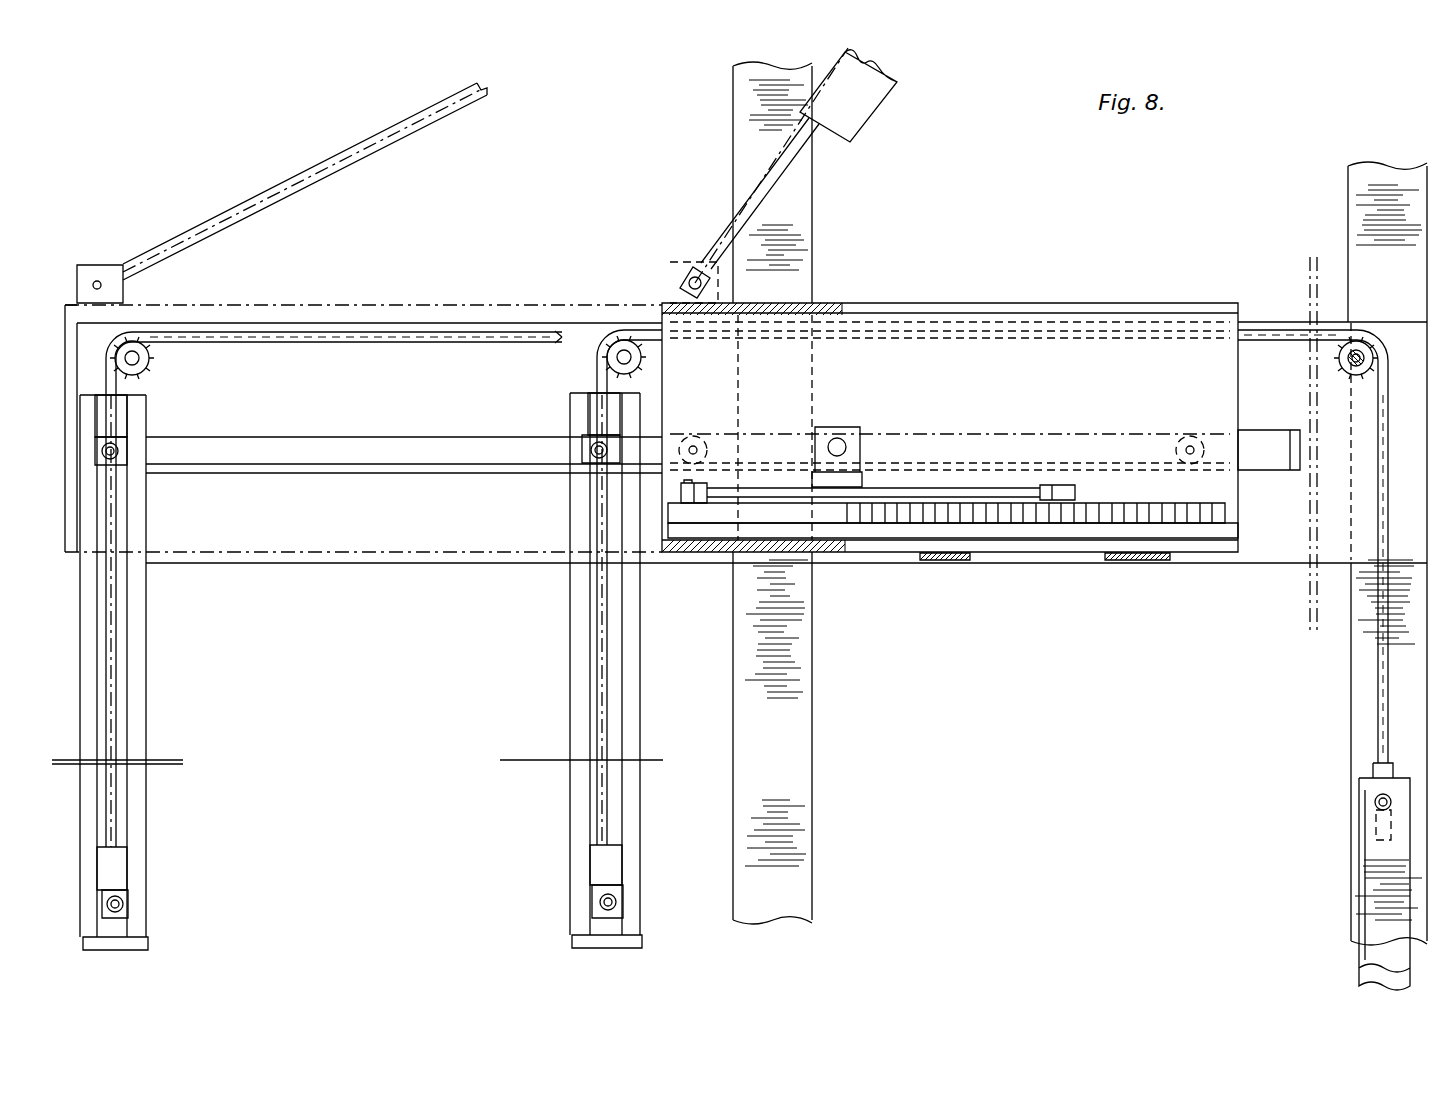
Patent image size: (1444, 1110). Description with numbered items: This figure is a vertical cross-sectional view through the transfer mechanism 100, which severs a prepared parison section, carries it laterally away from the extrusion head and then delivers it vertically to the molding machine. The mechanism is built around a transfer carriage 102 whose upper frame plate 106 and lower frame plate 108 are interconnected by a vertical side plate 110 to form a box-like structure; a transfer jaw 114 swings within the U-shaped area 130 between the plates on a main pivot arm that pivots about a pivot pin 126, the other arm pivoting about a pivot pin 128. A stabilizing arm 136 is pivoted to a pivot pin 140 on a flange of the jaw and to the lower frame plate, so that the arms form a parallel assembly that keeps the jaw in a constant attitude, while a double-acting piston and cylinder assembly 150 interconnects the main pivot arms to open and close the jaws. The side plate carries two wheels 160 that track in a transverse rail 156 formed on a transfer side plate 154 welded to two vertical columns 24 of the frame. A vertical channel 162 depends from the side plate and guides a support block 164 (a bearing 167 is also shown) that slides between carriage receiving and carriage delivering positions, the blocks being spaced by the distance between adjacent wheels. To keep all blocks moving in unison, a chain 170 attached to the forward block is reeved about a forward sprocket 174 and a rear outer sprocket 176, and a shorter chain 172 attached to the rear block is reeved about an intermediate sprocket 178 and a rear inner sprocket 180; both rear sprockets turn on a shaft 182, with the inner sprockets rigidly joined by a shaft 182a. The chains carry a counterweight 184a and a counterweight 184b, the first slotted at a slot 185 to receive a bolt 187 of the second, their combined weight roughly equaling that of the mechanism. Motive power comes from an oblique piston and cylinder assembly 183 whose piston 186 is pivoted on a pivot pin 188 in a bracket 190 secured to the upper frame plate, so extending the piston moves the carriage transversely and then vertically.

The column 24 is at (733, 107).
The transfer mechanism 100 is at (975, 580).
The transfer carriage 102 is at (1105, 571).
The upper frame plate 106 is at (835, 302).
The lower frame plate 108 is at (713, 553).
The side plate 110 is at (1238, 358).
The transfer jaw 114 is at (1023, 524).
The pivot pin 126 is at (687, 480).
The pivot pin 128 is at (1152, 302).
The U-shaped area 130 is at (1212, 545).
The stabilizing arm 136 is at (980, 490).
The pivot pin 140 is at (1057, 486).
The piston and cylinder assembly 150 is at (841, 427).
The transfer side plate 154 is at (352, 563).
The transverse rail 156 is at (437, 472).
The wheel 160 is at (694, 436).
The vertical channel 162 is at (140, 828).
The support block 164 is at (100, 412).
The bearing 167 is at (98, 455).
The chain 170 is at (105, 383).
The chain 172 is at (698, 343).
The forward sprocket 174 is at (150, 372).
The rear outer sprocket 176 is at (1346, 380).
The intermediate sprocket 178 is at (606, 360).
The rear inner sprocket 180 is at (295, 174).
The shaft 182 is at (1373, 343).
The shaft 182a is at (1350, 362).
The piston and cylinder assembly 183 is at (889, 97).
The counterweight 184a is at (1367, 878).
The counterweight 184b is at (1363, 967).
The slot 185 is at (1366, 823).
The piston 186 is at (722, 238).
The bolt 187 is at (1375, 802).
The pivot pin 188 is at (78, 285).
The bracket 190 is at (93, 267).